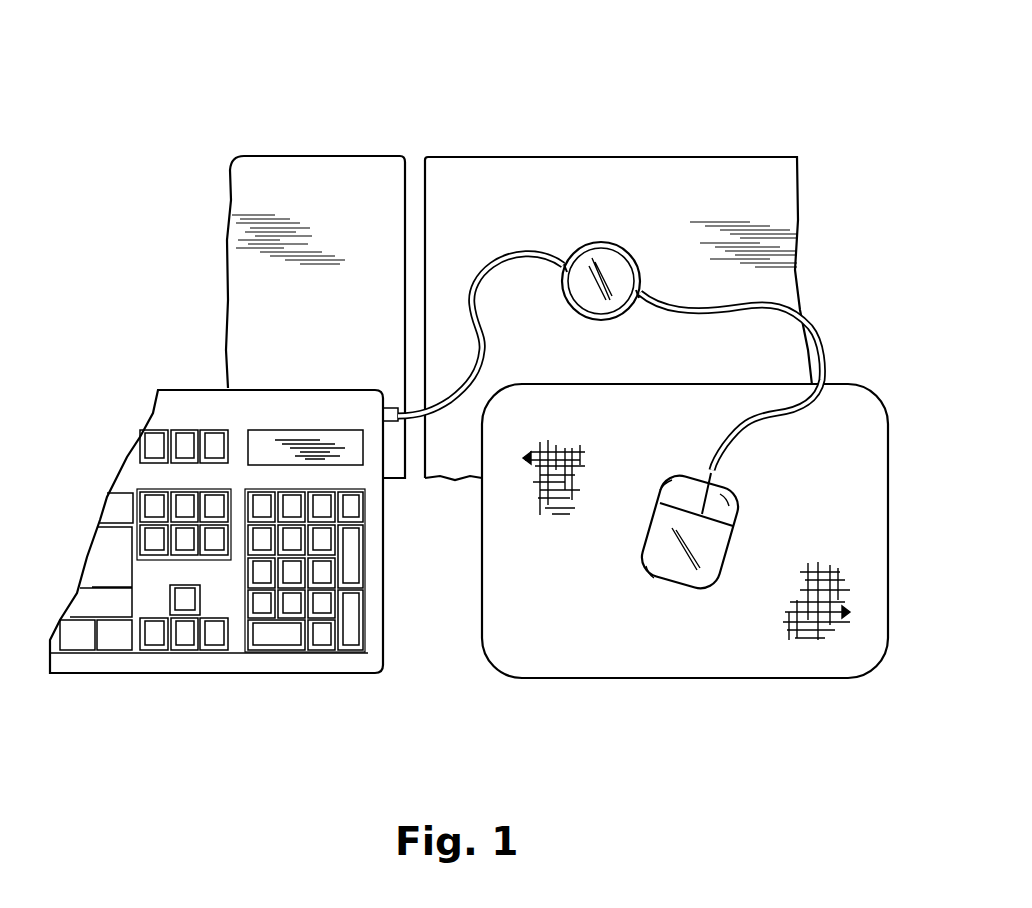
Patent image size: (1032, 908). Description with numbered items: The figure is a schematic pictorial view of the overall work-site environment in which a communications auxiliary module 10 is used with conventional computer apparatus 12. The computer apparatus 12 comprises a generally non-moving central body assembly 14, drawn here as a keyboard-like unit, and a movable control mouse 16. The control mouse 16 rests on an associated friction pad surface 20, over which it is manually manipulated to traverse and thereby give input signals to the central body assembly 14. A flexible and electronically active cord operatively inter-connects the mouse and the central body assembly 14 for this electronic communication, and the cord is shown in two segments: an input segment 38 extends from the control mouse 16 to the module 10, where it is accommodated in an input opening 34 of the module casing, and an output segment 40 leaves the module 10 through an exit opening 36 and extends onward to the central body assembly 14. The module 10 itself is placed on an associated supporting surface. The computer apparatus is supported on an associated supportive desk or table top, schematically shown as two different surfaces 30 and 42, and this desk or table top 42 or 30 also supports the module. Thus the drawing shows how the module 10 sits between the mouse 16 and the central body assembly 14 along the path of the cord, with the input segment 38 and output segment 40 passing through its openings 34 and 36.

The communications auxiliary module 10 is at (591, 244).
The computer apparatus 12 is at (437, 127).
The central body assembly 14 is at (380, 572).
The control mouse 16 is at (740, 498).
The friction pad surface 20 is at (490, 605).
The supportive desk or table top 30 is at (662, 172).
The input opening 34 is at (645, 292).
The exit opening 36 is at (563, 268).
The input segment 38 is at (828, 337).
The output segment 40 is at (493, 258).
The supportive desk or table top 42 is at (379, 172).